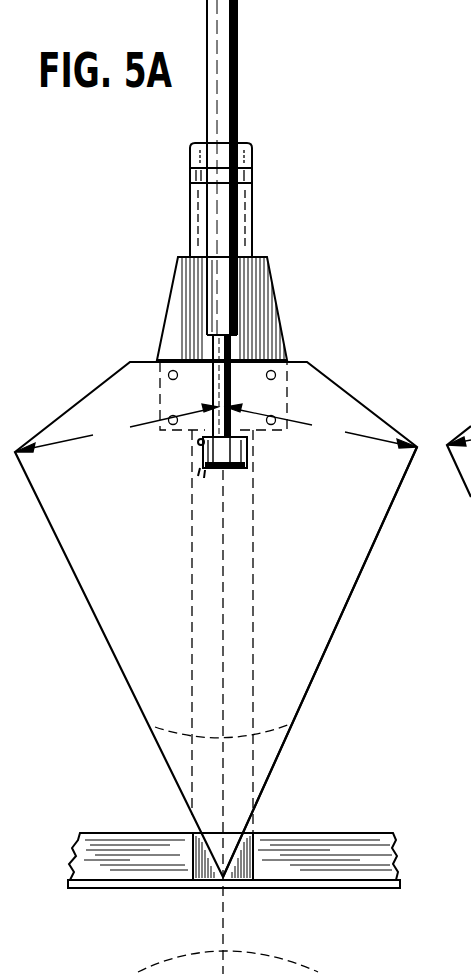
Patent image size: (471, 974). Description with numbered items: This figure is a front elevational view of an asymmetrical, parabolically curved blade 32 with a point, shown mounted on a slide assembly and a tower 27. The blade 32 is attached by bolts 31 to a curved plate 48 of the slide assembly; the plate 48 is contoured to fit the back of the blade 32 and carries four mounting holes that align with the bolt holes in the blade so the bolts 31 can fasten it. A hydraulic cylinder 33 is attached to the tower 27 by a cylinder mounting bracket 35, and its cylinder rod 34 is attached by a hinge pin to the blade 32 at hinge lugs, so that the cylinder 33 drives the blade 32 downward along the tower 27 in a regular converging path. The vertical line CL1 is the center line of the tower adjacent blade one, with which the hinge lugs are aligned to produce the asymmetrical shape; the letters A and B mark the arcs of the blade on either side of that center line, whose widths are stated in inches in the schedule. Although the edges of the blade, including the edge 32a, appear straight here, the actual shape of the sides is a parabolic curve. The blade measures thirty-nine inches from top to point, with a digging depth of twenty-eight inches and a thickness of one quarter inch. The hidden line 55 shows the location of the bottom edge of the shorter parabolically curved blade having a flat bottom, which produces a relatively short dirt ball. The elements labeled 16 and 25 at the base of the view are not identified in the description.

The hydraulic cylinder 33 is at (238, 22).
The cylinder mounting bracket 35 is at (253, 178).
The tower 27 is at (200, 228).
The curved plate 48 is at (263, 283).
The center line of tower CL1 is at (212, 290).
The cylinder rod 34 is at (216, 348).
The bolts 31 is at (273, 371).
The blade 32 is at (165, 564).
The plate edge 32a is at (344, 611).
The hidden line 55 is at (262, 740).
The bar 16 is at (118, 832).
The base plate 25 is at (146, 889).
The arc of asymmetrical blade A is at (321, 426).
The arc of asymmetrical blade B is at (116, 428).